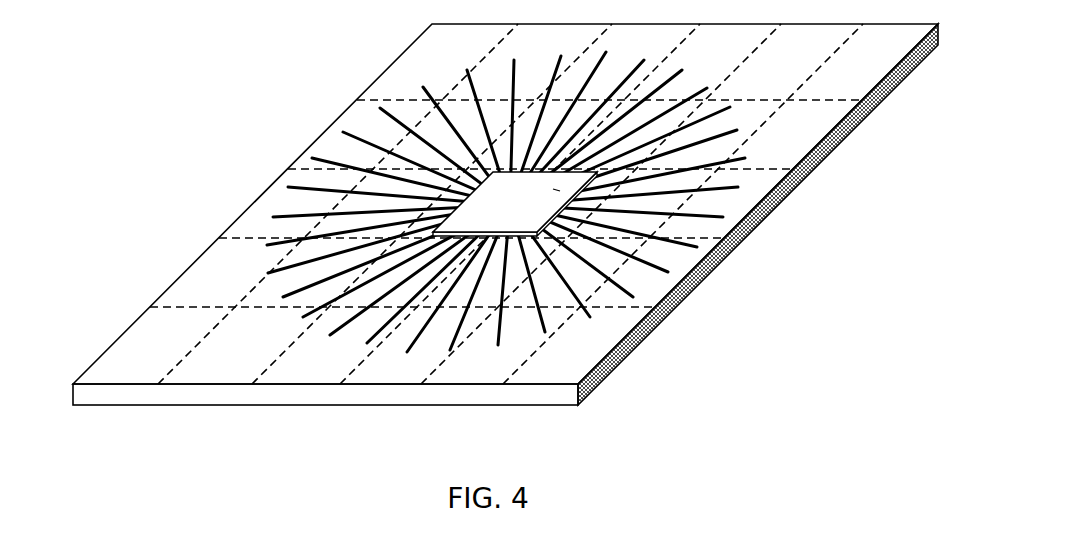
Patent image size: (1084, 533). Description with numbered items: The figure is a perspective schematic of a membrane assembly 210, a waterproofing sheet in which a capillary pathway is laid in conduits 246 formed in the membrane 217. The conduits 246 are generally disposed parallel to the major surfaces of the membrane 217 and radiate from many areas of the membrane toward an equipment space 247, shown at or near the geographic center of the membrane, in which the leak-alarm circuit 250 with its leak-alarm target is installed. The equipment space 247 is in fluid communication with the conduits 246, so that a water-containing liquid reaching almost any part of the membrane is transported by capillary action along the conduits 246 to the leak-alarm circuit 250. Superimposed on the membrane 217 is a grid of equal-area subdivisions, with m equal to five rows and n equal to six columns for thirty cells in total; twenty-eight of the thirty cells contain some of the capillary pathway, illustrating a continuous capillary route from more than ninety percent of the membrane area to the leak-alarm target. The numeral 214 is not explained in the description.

The membrane assembly 210 is at (494, 219).
The grid line 214 is at (615, 313).
The membrane 217 is at (690, 285).
The conduits 246 is at (724, 194).
The equipment space 247 is at (552, 189).
The leak-alarm circuit 250 is at (526, 217).